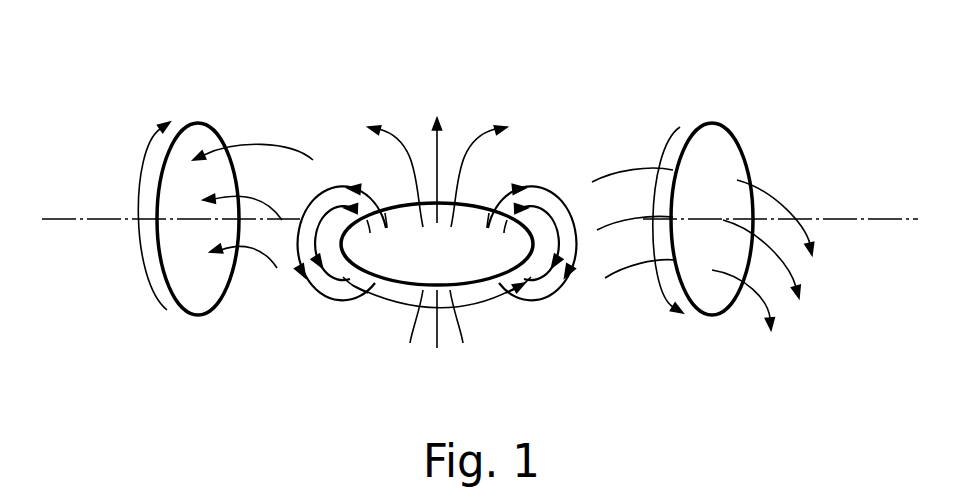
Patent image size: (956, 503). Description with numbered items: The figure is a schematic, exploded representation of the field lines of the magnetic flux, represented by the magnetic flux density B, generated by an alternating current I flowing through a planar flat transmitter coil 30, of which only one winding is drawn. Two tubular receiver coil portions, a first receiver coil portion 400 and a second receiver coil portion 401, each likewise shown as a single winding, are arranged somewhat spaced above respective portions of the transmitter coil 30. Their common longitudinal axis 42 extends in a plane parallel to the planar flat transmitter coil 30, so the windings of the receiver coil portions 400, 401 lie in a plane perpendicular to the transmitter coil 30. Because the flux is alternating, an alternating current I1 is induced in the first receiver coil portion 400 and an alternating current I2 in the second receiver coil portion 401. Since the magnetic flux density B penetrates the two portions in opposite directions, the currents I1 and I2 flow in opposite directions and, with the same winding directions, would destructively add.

The common longitudinal axis 42 is at (80, 217).
The first receiver coil portion 400 is at (165, 160).
The second receiver coil portion 401 is at (713, 122).
The planar flat transmitter coil 30 is at (395, 282).
The alternating current I is at (443, 307).
The alternating current induced in the first receiver coil portion I1 is at (143, 242).
The alternating current induced in the second receiver coil portion I2 is at (663, 290).
The magnetic flux density B is at (265, 143).